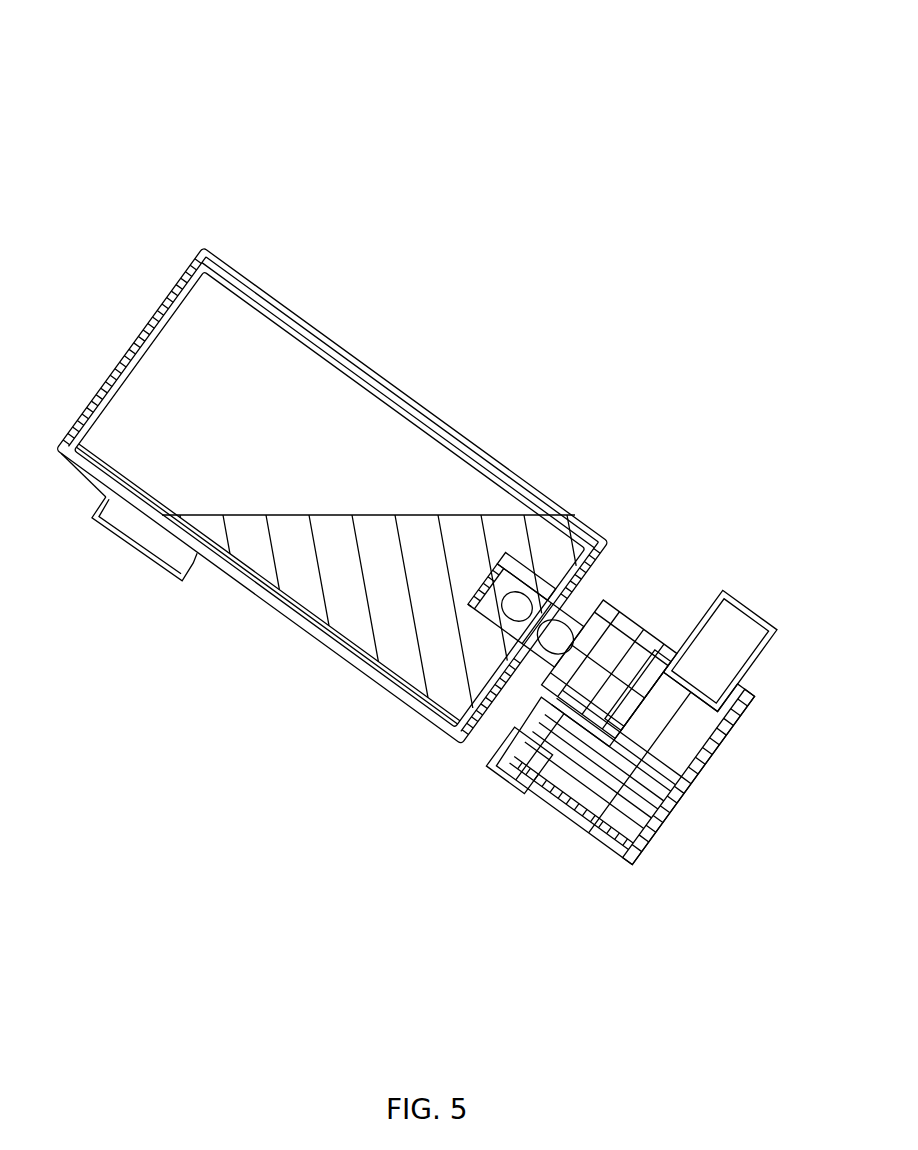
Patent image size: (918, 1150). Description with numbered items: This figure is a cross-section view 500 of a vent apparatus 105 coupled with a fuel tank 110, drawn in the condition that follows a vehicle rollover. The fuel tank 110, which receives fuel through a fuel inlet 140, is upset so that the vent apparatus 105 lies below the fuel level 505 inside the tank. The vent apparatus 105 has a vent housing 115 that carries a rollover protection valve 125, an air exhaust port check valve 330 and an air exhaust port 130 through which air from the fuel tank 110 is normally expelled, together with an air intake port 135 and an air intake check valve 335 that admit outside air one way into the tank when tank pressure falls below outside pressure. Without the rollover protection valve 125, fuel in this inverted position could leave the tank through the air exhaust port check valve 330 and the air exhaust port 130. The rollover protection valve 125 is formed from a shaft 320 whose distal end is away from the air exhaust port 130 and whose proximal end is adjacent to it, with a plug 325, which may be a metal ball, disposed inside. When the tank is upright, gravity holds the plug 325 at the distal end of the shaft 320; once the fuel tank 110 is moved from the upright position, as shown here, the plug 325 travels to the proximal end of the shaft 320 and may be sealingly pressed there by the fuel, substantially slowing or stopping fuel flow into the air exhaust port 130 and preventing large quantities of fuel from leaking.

The cross-section view 500 is at (708, 41).
The fuel tank 110 is at (325, 340).
The fuel level 505 is at (405, 513).
The fuel inlet 140 is at (182, 583).
The plug 325 is at (470, 690).
The shaft 320 is at (530, 590).
The rollover protection valve 125 is at (478, 609).
The vent housing 115 is at (628, 618).
The air exhaust port check valve 330 is at (648, 680).
The air exhaust port 130 is at (740, 602).
The air intake port 135 is at (593, 840).
The vent apparatus 105 is at (724, 744).
The air intake check valve 335 is at (500, 773).